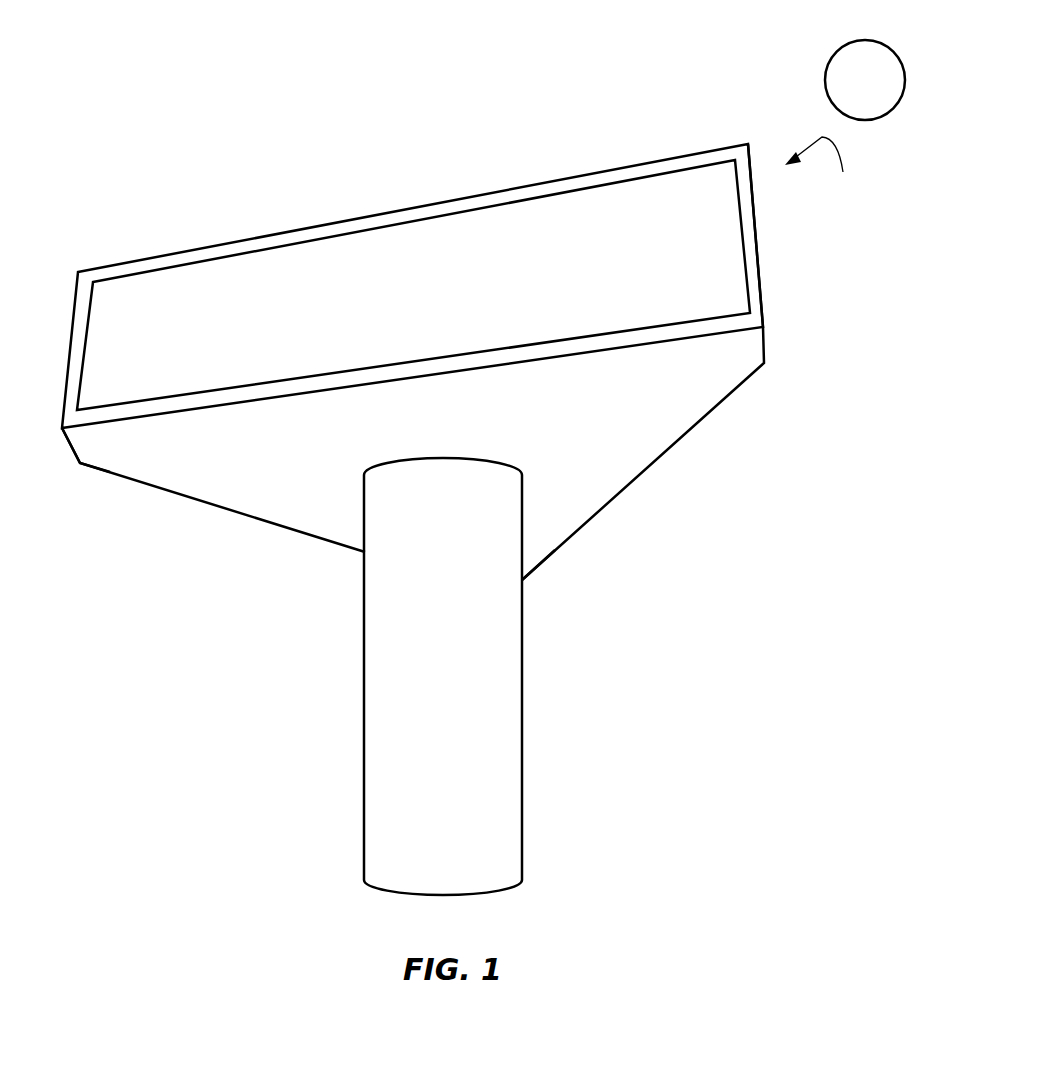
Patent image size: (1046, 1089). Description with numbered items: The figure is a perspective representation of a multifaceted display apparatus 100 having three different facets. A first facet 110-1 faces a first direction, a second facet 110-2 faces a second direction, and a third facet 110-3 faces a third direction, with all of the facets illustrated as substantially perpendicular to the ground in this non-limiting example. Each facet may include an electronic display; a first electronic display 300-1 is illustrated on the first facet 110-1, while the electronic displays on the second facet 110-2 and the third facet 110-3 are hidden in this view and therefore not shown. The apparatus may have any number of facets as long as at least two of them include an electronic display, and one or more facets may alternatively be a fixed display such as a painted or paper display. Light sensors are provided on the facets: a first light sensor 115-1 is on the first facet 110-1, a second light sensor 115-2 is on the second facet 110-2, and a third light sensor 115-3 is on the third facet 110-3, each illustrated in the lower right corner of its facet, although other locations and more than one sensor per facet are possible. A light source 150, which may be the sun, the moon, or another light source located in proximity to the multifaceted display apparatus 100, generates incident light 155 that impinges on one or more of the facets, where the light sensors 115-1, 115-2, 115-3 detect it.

The multifaceted display apparatus 100 is at (229, 172).
The first facet 110-1 is at (427, 205).
The second facet 110-2 is at (243, 517).
The third facet 110-3 is at (635, 482).
The first light sensor 115-1 is at (755, 319).
The second light sensor 115-2 is at (100, 472).
The third light sensor 115-3 is at (533, 573).
The first electronic display 300-1 is at (413, 285).
The light source 150 is at (835, 52).
The incident light 155 is at (827, 168).